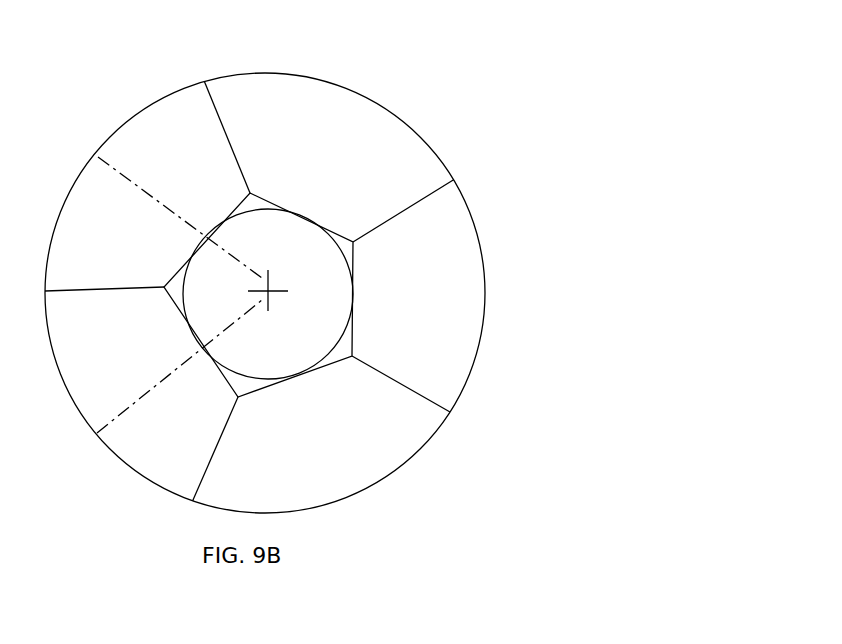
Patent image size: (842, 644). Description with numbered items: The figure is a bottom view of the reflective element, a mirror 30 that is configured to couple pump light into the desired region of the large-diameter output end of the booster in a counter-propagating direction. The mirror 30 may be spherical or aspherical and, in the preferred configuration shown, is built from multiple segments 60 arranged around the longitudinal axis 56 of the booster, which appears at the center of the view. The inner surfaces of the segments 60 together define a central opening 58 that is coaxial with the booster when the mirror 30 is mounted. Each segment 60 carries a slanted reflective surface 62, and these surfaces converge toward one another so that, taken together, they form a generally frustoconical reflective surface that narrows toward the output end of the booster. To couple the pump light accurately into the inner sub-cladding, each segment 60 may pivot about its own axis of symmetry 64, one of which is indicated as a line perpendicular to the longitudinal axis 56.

The mirror 30 is at (462, 146).
The longitudinal axis 56 is at (272, 295).
The opening 58 is at (298, 235).
The segments 60 is at (256, 108).
The slanted reflective surfaces 62 is at (438, 298).
The axes of symmetry 64 is at (133, 180).